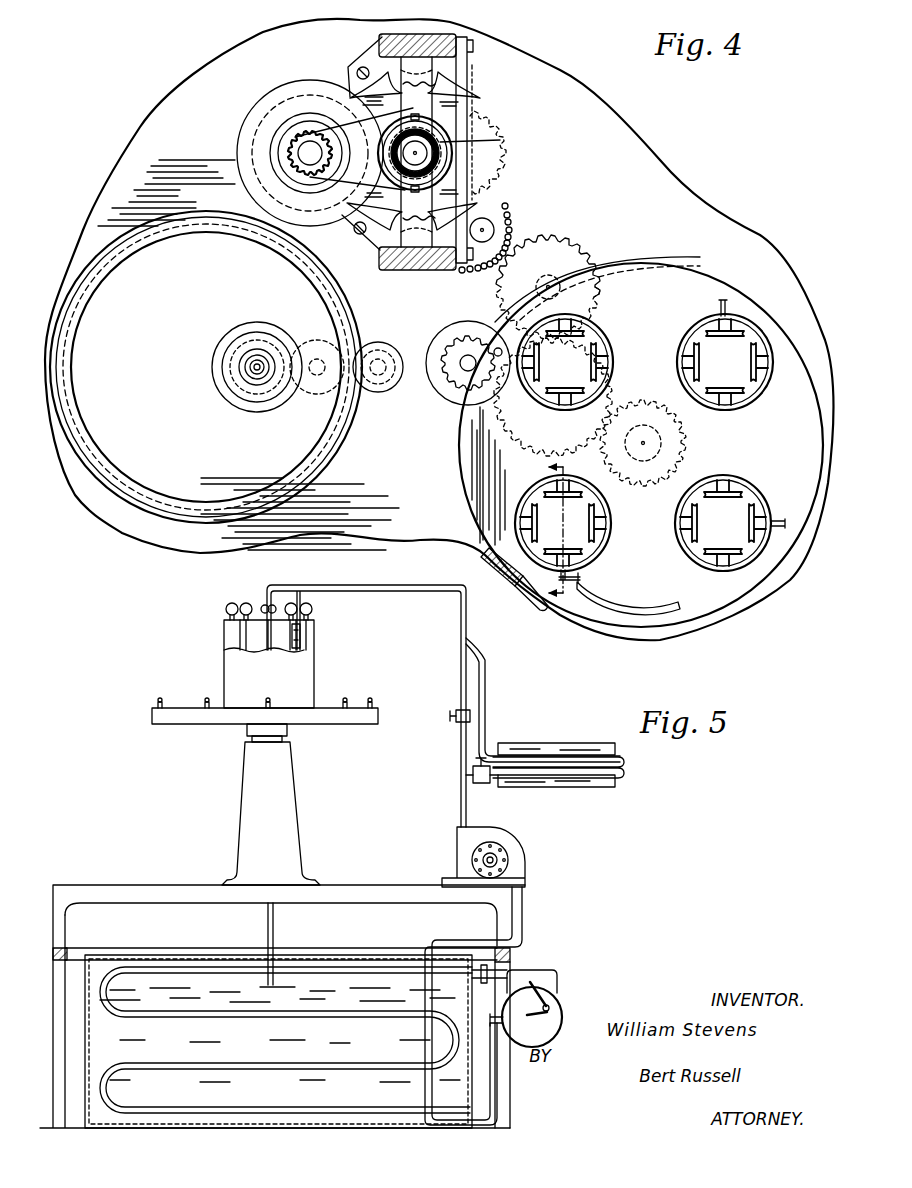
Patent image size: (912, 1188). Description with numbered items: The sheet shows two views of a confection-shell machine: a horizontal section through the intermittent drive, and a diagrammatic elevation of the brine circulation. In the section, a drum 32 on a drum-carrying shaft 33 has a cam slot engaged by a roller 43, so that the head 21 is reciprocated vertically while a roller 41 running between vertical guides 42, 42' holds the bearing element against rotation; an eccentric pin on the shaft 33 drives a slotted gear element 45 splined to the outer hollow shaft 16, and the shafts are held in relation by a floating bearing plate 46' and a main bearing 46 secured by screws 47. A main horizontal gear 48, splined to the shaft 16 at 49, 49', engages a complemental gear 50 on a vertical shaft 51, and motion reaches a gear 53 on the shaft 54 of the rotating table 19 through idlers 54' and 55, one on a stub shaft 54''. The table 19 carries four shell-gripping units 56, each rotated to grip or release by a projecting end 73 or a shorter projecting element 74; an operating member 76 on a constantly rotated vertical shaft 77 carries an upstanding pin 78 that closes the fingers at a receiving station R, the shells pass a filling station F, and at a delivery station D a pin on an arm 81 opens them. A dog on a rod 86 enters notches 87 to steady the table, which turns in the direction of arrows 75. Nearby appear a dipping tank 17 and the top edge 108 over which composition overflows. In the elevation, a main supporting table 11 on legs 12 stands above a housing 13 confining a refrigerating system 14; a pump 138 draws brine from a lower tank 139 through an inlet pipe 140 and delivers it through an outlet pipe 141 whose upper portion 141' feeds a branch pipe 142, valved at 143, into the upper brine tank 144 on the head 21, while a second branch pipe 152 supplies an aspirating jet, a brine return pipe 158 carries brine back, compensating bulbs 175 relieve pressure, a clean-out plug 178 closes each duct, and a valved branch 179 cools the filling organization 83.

In FIG. 4, the dipping tank 17 is at (147, 500).
In FIG. 4, the top edge of inner receptacular element 108 is at (222, 392).
In FIG. 4, the drum 32 is at (260, 117).
In FIG. 4, the drum-carrying shaft 33 is at (305, 145).
In FIG. 4, the roller 43 is at (315, 187).
In FIG. 4, the main bearing 46 is at (400, 145).
In FIG. 5, the main bearing 46 is at (280, 804).
In FIG. 4, the floating bearing plate 46' is at (357, 144).
In FIG. 4, the screws or bolts 47 is at (360, 235).
In FIG. 4, the vertical guide 42' is at (474, 147).
In FIG. 4, the splined connection 49' is at (494, 51).
In FIG. 4, the outer hollow shaft 16 is at (425, 130).
In FIG. 4, the main horizontal gear 48 is at (483, 121).
In FIG. 4, the roller 41 is at (483, 135).
In FIG. 4, the slotted gear element 45 is at (500, 140).
In FIG. 4, the vertical guide 42 is at (517, 165).
In FIG. 4, the splined connection 49 is at (519, 172).
In FIG. 4, the complemental gear 50 is at (497, 221).
In FIG. 4, the vertical shaft 51 is at (545, 232).
In FIG. 4, the idler 54' is at (597, 272).
In FIG. 4, the stub shaft 54'' is at (610, 278).
In FIG. 4, the filling station F is at (784, 310).
In FIG. 4, the notches 87 is at (780, 328).
In FIG. 4, the arrows 75 is at (656, 276).
In FIG. 4, the idler 55 is at (615, 395).
In FIG. 4, the shaft 54 is at (684, 443).
In FIG. 4, the gear 53 is at (673, 460).
In FIG. 4, the movable operating member 76 is at (453, 395).
In FIG. 4, the vertical shaft 77 is at (510, 347).
In FIG. 4, the upstanding pin 78 is at (504, 350).
In FIG. 4, the receiving station R is at (494, 320).
In FIG. 4, the projecting element 74 is at (553, 308).
In FIG. 4, the projecting end of pin 73 is at (720, 304).
In FIG. 4, the shell-gripping unit 56 is at (771, 386).
In FIG. 4, the delivery station D is at (609, 545).
In FIG. 4, the rotating table 19 is at (483, 494).
In FIG. 4, the rod 86 is at (488, 552).
In FIG. 4, the arm 81 is at (628, 607).
In FIG. 5, the main supporting table 11 is at (142, 890).
In FIG. 5, the legs 12 is at (64, 934).
In FIG. 5, the lower tank 139 is at (353, 965).
In FIG. 5, the housing or frame 13 is at (500, 1085).
In FIG. 5, the brine return pipe 158 is at (278, 938).
In FIG. 5, the inlet pipe 140 is at (523, 924).
In FIG. 5, the refrigerating apparatus or system 14 is at (570, 995).
In FIG. 5, the pump 138 is at (522, 856).
In FIG. 5, the head 21 is at (170, 727).
In FIG. 5, the clean-out plug 178 is at (347, 713).
In FIG. 5, the upper brine tank 144 is at (303, 669).
In FIG. 5, the second branch pipe 152 is at (273, 627).
In FIG. 5, the valve 143 is at (315, 640).
In FIG. 5, the compensating bulbs 175 is at (230, 603).
In FIG. 5, the branch pipe 142 is at (306, 606).
In FIG. 5, the upper portion of outlet pipe 141' is at (368, 688).
In FIG. 5, the valved branch 179 is at (488, 692).
In FIG. 5, the filling organization 83 is at (568, 786).
In FIG. 5, the outlet pipe 141 is at (443, 794).